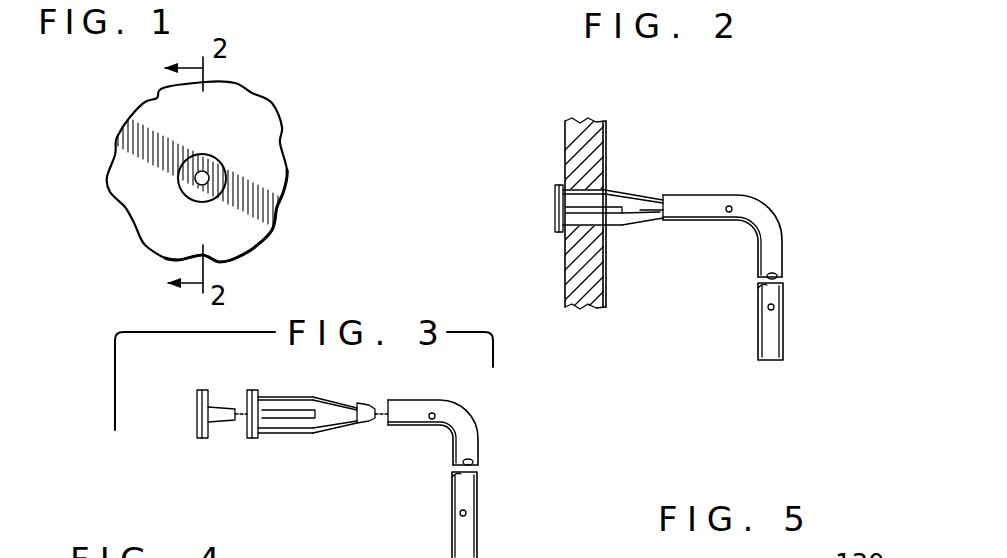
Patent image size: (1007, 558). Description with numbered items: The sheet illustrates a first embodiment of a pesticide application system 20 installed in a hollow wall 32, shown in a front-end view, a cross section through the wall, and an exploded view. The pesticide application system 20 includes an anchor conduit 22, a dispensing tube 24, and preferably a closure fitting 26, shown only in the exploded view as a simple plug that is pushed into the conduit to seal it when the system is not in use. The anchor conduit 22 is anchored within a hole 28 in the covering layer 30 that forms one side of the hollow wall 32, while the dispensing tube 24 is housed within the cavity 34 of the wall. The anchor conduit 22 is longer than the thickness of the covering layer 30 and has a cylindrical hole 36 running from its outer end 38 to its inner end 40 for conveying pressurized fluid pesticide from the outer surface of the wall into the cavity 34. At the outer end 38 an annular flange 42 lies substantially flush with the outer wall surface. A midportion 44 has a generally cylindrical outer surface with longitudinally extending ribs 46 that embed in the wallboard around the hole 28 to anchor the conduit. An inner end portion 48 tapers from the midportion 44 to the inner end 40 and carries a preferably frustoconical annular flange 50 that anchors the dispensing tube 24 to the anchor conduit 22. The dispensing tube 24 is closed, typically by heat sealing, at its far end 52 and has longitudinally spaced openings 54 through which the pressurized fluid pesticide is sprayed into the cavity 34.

In FIG. 1, the pesticide application system 20 is at (285, 74).
In FIG. 2, the pesticide application system 20 is at (777, 153).
In FIG. 3, the pesticide application system 20 is at (482, 387).
In FIG. 1, the anchor conduit 22 is at (240, 168).
In FIG. 2, the anchor conduit 22 is at (630, 182).
In FIG. 3, the anchor conduit 22 is at (283, 382).
In FIG. 2, the dispensing tube 24 is at (747, 312).
In FIG. 3, the dispensing tube 24 is at (438, 482).
In FIG. 3, the closure fitting 26 is at (182, 405).
In FIG. 2, the hole 28 is at (612, 228).
In FIG. 1, the covering layer 30 is at (244, 131).
In FIG. 2, the covering layer 30 is at (575, 129).
In FIG. 2, the hollow wall 32 is at (542, 135).
In FIG. 2, the cavity 34 is at (716, 283).
In FIG. 1, the cylindrical hole 36 is at (198, 180).
In FIG. 2, the outer end 38 is at (556, 224).
In FIG. 3, the inner end 40 is at (375, 423).
In FIG. 1, the annular flange 42 is at (194, 196).
In FIG. 2, the annular flange 42 is at (557, 188).
In FIG. 2, the midportion 44 is at (612, 190).
In FIG. 3, the midportion 44 is at (312, 430).
In FIG. 2, the longitudinally extending ribs 46 is at (606, 199).
In FIG. 3, the longitudinally extending ribs 46 is at (290, 396).
In FIG. 2, the inner end portion 48 is at (638, 218).
In FIG. 3, the inner end portion 48 is at (336, 405).
In FIG. 3, the annular flange 50 is at (355, 426).
In FIG. 2, the far end 52 is at (754, 358).
In FIG. 3, the far end 52 is at (450, 550).
In FIG. 2, the openings 54 is at (732, 206).
In FIG. 3, the openings 54 is at (437, 416).